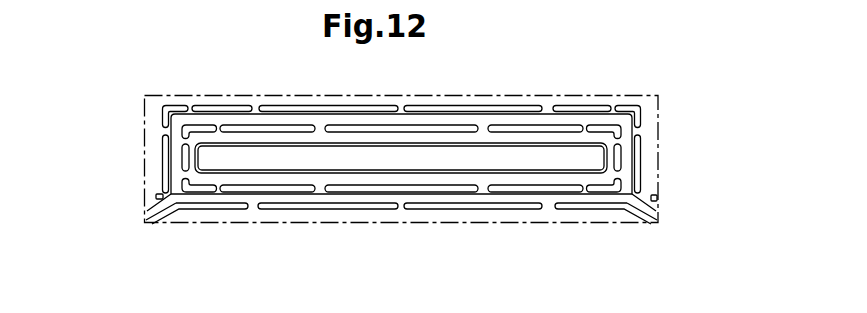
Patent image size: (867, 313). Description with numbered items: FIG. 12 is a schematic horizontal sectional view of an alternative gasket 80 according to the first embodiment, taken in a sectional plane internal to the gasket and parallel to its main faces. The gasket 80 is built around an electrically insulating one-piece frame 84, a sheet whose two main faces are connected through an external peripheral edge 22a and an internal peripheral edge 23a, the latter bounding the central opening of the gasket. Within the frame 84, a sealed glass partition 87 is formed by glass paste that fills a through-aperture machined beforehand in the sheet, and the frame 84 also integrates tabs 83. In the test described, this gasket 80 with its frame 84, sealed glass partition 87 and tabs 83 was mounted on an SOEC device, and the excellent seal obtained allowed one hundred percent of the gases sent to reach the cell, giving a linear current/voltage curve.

The gasket 80 is at (116, 225).
The external peripheral edge 22a is at (593, 94).
The internal peripheral edge 23a is at (517, 147).
The tabs 83 is at (647, 130).
The frame 84 is at (583, 226).
The sealed glass partition 87 is at (220, 118).